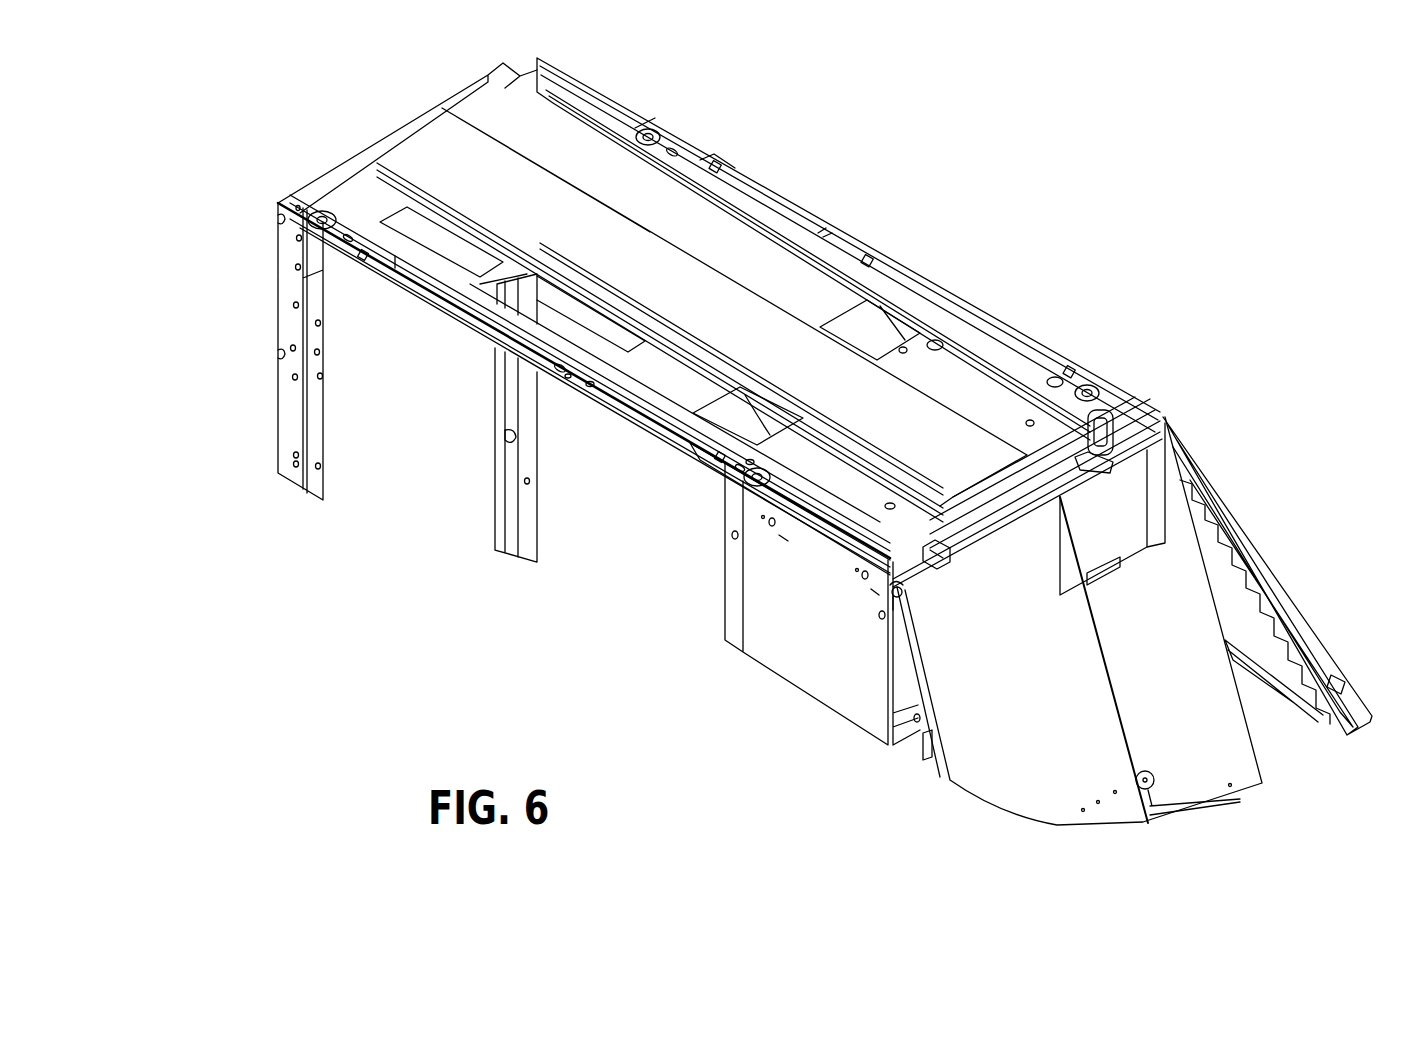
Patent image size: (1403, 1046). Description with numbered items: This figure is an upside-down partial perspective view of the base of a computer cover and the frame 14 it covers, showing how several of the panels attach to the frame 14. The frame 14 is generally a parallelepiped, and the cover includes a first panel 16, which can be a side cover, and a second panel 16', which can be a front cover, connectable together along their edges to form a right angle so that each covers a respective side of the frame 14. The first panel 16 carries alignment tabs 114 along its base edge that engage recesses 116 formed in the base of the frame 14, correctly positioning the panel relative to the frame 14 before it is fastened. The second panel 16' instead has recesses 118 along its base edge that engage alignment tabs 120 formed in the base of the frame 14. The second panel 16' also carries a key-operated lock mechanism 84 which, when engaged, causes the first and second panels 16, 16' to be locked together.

The frame 14 is at (828, 611).
The first panel 16 is at (1267, 576).
The second panel 16' is at (1079, 644).
The lock mechanism 84 is at (1188, 821).
The alignment tabs 114 is at (848, 249).
The recesses 116 is at (584, 385).
The recesses 118 is at (1044, 512).
The alignment tabs 120 is at (1001, 488).